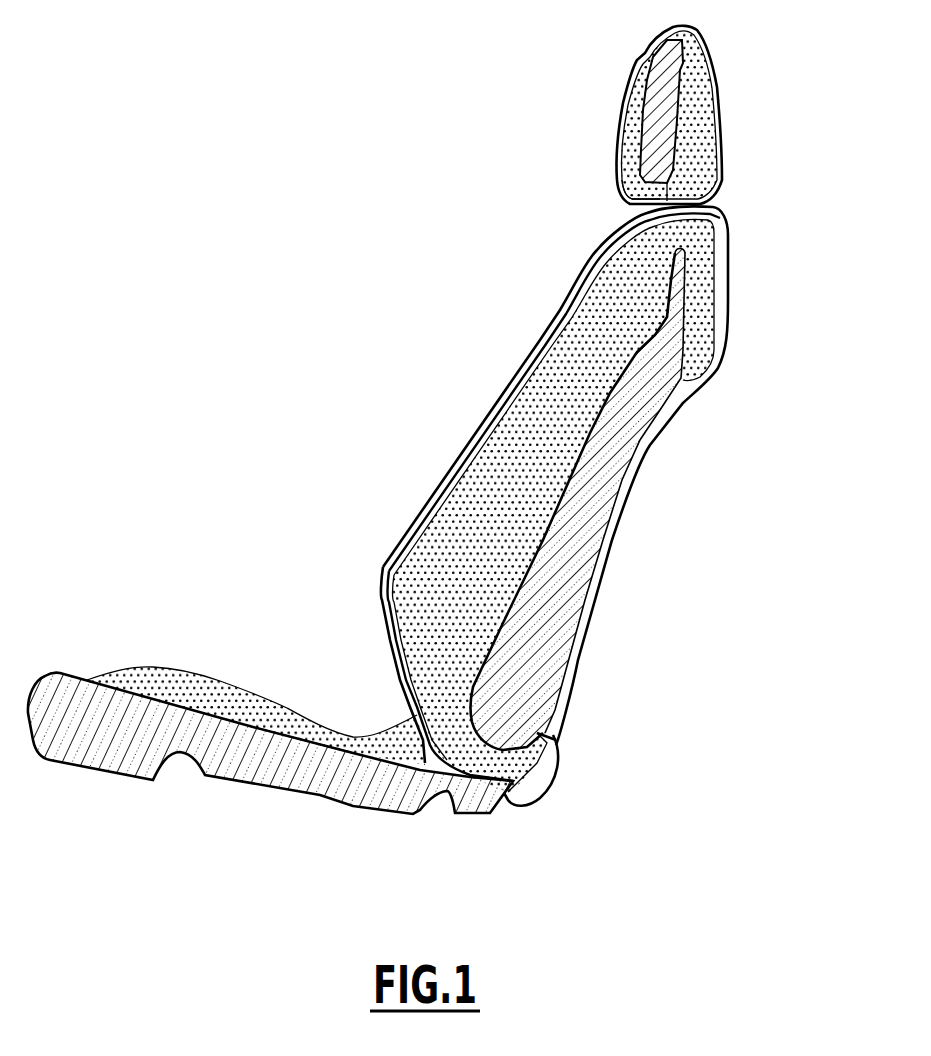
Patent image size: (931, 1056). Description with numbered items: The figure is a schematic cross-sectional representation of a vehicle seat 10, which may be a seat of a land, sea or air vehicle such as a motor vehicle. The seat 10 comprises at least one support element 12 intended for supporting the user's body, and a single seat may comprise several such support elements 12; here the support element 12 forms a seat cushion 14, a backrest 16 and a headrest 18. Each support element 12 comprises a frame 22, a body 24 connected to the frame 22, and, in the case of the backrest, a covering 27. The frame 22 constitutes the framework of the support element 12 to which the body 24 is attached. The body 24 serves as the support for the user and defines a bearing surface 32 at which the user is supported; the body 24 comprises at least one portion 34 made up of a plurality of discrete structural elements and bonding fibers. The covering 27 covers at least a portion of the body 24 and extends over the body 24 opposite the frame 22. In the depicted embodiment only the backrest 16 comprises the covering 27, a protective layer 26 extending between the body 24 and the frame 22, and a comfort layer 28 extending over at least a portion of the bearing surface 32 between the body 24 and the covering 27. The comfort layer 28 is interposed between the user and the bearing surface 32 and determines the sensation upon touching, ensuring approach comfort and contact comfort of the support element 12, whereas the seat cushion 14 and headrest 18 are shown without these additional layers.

The vehicle seat 10 is at (266, 218).
The support element 12 is at (435, 438).
The seat cushion 14 is at (144, 647).
The backrest 16 is at (744, 299).
The headrest 18 is at (616, 70).
The frame 22 is at (657, 127).
The body 24 is at (627, 134).
The protective layer 26 is at (537, 557).
The covering 27 is at (540, 353).
The comfort layer 28 is at (493, 413).
The bearing surface 32 is at (618, 97).
The portion 34 is at (612, 170).